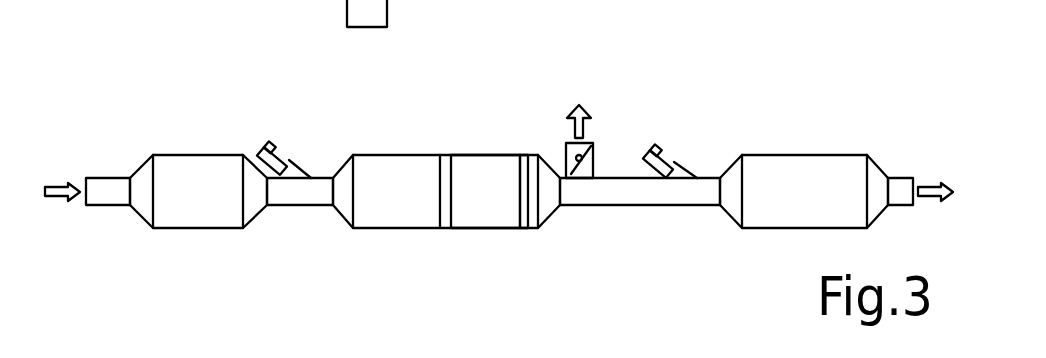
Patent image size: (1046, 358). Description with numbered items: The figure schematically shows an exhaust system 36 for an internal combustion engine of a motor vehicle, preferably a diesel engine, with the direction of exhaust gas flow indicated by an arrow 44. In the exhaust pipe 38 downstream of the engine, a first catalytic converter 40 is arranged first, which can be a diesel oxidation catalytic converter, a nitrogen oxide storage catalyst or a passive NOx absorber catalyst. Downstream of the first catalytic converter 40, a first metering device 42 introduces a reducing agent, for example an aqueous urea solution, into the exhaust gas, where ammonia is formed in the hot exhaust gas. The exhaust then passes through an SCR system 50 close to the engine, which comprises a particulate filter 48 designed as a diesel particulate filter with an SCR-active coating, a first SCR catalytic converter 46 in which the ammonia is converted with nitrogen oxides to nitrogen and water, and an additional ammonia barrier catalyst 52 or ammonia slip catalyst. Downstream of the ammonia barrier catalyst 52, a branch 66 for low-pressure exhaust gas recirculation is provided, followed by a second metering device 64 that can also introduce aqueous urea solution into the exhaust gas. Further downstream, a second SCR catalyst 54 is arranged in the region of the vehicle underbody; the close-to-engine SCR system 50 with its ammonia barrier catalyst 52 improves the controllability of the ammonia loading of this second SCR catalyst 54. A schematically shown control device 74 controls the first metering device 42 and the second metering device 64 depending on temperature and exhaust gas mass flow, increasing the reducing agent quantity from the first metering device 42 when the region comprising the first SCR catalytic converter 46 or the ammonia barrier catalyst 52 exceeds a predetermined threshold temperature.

The exhaust system 36 is at (192, 97).
The exhaust pipe 38 is at (112, 193).
The first catalytic converter 40 is at (192, 212).
The first metering device 42 is at (268, 146).
The arrow 44 is at (57, 201).
The first SCR catalytic converter 46 is at (482, 166).
The particulate filter 48 is at (398, 166).
The SCR system 50 is at (327, 143).
The ammonia barrier catalyst 52 is at (530, 166).
The second SCR catalyst 54 is at (810, 168).
The second metering device 64 is at (656, 141).
The branch 66 is at (580, 168).
The control device 74 is at (387, 12).